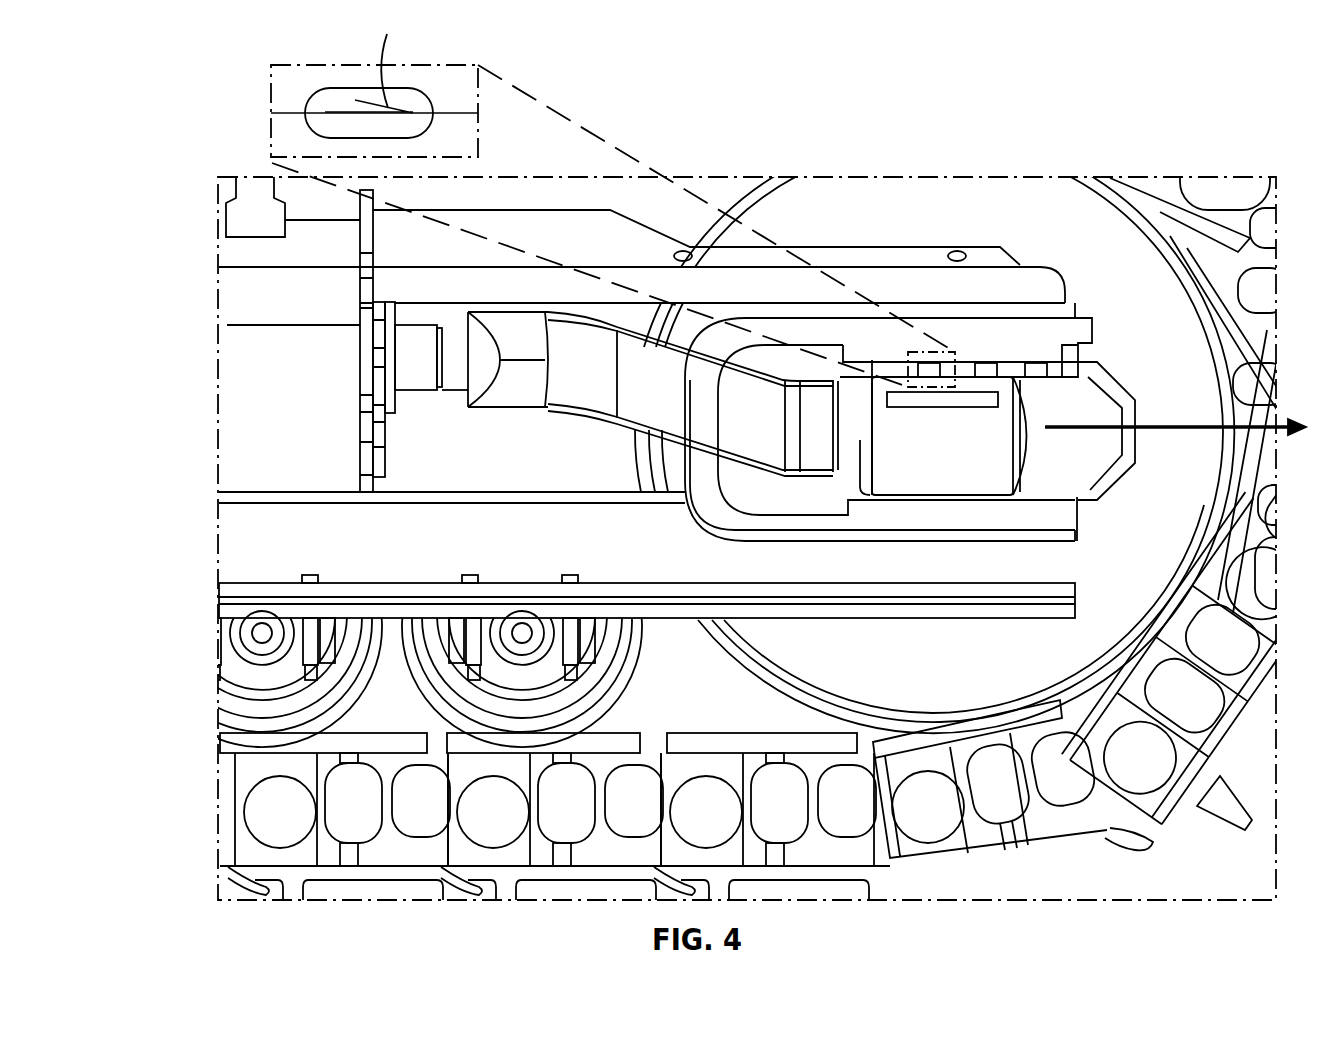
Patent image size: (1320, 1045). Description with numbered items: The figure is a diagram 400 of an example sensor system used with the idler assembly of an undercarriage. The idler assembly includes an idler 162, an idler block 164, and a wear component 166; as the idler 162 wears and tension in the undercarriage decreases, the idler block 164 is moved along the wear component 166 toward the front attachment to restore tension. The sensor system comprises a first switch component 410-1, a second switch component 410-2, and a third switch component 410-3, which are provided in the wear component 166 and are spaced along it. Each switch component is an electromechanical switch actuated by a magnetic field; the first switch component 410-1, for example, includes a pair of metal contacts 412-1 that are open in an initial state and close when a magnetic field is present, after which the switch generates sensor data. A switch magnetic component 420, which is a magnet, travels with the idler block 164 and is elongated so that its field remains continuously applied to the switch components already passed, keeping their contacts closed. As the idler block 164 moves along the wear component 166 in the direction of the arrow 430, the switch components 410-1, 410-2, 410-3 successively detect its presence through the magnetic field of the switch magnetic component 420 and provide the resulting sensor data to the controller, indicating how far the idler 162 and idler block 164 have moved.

The diagram 400 is at (214, 58).
The pair of metal contacts 412-1 is at (325, 112).
The first switch component 410-1 is at (923, 355).
The second switch component 410-2 is at (983, 355).
The third switch component 410-3 is at (1035, 360).
The idler 162 is at (1102, 297).
The idler block 164 is at (1077, 350).
The wear component 166 is at (1003, 447).
The switch magnetic component 420 is at (957, 408).
The arrow 430 is at (1148, 428).